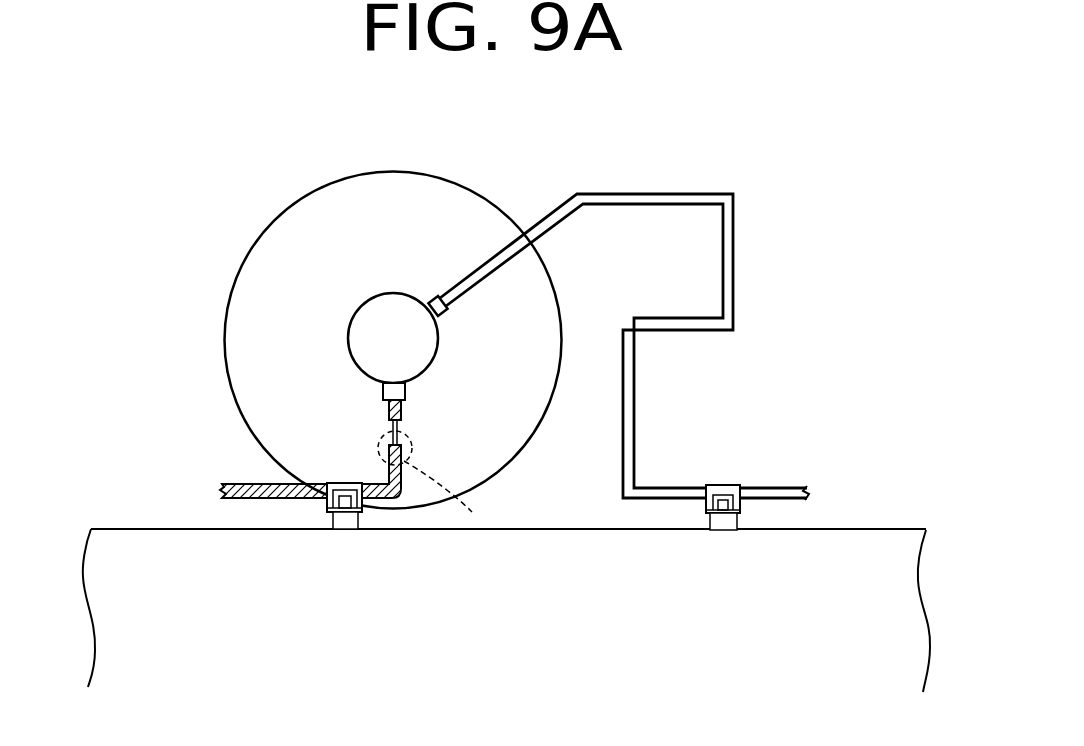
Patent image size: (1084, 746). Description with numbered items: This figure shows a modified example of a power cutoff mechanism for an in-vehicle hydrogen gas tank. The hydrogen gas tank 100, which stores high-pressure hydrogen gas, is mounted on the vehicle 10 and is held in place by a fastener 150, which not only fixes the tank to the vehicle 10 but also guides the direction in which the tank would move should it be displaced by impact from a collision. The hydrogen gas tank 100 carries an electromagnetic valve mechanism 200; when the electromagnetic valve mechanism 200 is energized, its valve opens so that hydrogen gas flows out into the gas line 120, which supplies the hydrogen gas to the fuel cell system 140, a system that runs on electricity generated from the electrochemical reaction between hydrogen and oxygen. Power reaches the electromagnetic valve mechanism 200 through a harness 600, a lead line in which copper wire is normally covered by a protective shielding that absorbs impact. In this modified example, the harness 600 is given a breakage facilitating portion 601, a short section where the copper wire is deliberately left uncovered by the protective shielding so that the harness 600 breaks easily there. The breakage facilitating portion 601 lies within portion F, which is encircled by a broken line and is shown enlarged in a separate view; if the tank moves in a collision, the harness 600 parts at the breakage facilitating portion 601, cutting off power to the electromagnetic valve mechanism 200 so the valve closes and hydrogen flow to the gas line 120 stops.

The vehicle 10 is at (903, 574).
The hydrogen gas tank 100 is at (428, 174).
The gas line 120 is at (737, 262).
The fuel cell system 140 is at (345, 522).
The fastener 150 is at (724, 522).
The electromagnetic valve mechanism 200 is at (360, 312).
The harness 600 is at (370, 440).
The breakage facilitating portion 601 is at (398, 424).
The portion F is at (449, 494).